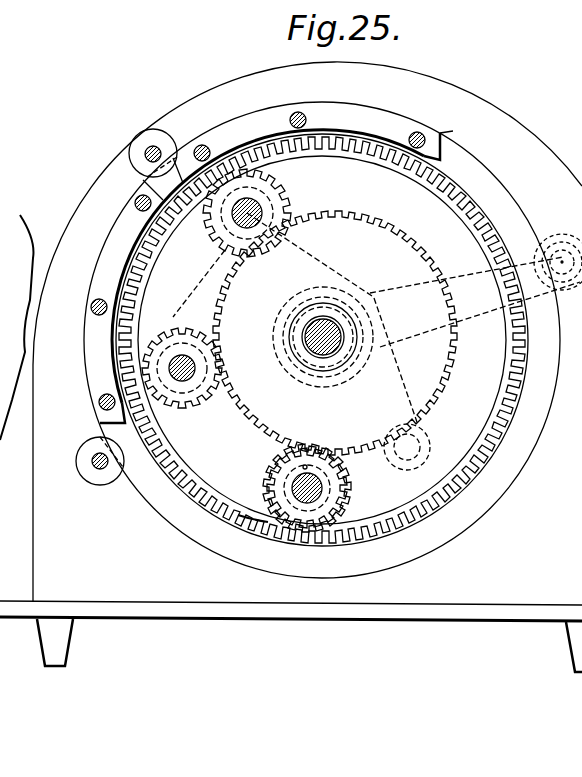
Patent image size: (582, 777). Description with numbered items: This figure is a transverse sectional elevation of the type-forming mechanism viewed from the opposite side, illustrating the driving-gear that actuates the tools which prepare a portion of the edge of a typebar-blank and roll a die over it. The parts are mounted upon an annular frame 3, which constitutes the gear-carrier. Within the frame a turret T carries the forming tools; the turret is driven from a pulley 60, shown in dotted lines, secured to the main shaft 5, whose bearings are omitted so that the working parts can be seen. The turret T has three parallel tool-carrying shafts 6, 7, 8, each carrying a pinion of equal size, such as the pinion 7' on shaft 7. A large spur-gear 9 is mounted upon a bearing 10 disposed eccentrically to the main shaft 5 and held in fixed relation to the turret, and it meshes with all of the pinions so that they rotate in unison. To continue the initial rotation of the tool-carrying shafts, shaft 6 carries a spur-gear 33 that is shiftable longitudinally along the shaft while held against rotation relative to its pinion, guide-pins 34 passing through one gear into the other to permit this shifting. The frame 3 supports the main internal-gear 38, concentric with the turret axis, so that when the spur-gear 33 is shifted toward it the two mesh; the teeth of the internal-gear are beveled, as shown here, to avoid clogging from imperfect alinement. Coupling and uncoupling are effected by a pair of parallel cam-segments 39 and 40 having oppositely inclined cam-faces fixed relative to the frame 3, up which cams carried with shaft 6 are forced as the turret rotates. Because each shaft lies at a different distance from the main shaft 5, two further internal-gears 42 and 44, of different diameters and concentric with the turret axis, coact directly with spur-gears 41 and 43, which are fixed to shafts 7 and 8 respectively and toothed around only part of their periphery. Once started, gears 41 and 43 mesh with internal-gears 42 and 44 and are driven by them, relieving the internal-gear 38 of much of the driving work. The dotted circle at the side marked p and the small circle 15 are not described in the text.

The annular frame 3 is at (291, 367).
The main shaft 5 is at (332, 357).
The tool-carrying shaft 6 is at (332, 487).
The tool-carrying shaft 7 is at (199, 368).
The pinion 7' is at (212, 360).
The tool-carrying shaft 8 is at (260, 230).
The large spur-gear 9 is at (335, 333).
The bearing 10 is at (377, 322).
The pin 15 is at (420, 433).
The spur-gear 33 is at (275, 460).
The guide-pins 34 is at (306, 465).
The main internal-gear 38 is at (470, 477).
The cam-segment 39 is at (115, 259).
The cam-segment 40 is at (264, 298).
The spur-gear 41 is at (202, 403).
The internal-gear 42 is at (385, 503).
The spur-gear 43 is at (223, 252).
The internal-gear 44 is at (253, 517).
The pulley 60 is at (315, 388).
The turret T is at (402, 365).
The pawl p is at (460, 275).